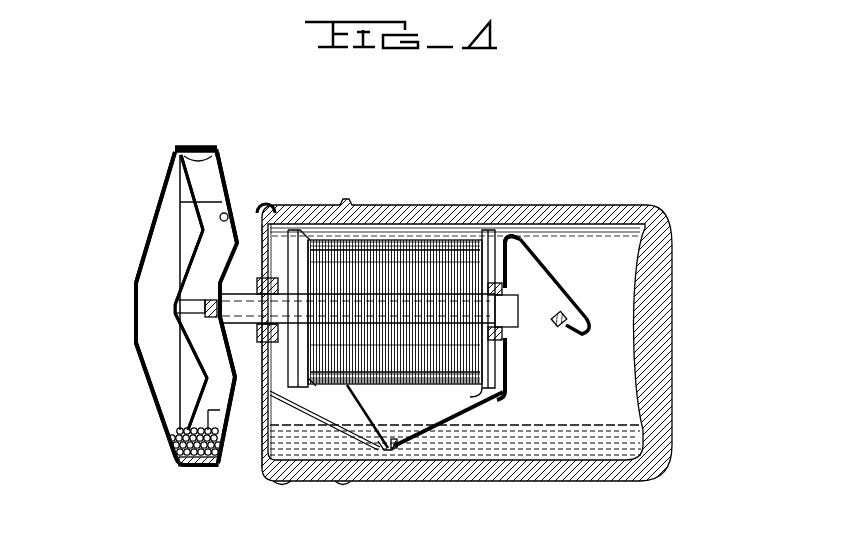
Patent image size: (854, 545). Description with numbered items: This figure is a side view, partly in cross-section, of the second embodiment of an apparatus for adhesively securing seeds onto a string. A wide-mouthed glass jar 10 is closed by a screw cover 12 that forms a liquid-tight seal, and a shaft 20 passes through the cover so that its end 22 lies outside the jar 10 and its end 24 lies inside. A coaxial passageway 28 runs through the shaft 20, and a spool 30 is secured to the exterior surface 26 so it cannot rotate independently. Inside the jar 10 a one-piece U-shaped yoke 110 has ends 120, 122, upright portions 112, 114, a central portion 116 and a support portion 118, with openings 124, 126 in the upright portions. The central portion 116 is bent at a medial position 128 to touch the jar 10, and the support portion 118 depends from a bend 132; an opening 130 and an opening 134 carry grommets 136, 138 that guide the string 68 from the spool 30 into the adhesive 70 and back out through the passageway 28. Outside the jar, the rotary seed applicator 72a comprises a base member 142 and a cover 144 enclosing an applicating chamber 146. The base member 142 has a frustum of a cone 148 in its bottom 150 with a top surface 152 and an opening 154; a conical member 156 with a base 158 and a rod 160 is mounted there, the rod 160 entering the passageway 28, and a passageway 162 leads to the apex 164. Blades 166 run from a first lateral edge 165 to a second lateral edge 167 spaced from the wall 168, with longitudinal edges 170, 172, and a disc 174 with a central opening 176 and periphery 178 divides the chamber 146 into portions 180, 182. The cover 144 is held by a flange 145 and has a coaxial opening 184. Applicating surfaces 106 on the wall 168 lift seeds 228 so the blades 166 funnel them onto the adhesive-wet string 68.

The glass jar 10 is at (428, 206).
The screw cover 12 is at (290, 484).
The shaft 20 is at (343, 265).
The shaft end 22 is at (202, 345).
The shaft end 24 is at (518, 305).
The exterior surface 26 is at (372, 272).
The passageway 28 is at (388, 262).
The spool 30 is at (428, 383).
The string 68 is at (372, 399).
The adhesive 70 is at (575, 426).
The rotary seed applicator 72a is at (213, 119).
The applicating surfaces 106 is at (205, 470).
The yoke 110 is at (498, 370).
The upright portion 112 is at (310, 402).
The upright portion 114 is at (506, 255).
The central portion 116 is at (448, 418).
The support portion 118 is at (545, 270).
The yoke end 120 is at (277, 284).
The yoke end 122 is at (581, 336).
The opening 124 is at (300, 382).
The opening 126 is at (518, 337).
The medial position 128 is at (383, 449).
The opening 130 is at (398, 446).
The bend 132 is at (508, 238).
The opening 134 is at (562, 318).
The grommet 136 is at (394, 451).
The grommet 138 is at (580, 324).
The base member 142 is at (220, 150).
The cover 144 is at (168, 200).
The flange 145 is at (190, 467).
The applicating chamber 146 is at (192, 402).
The frustum of a cone 148 is at (207, 283).
The bottom 150 is at (229, 425).
The top surface 152 is at (219, 275).
The opening 154 is at (265, 284).
The conical member 156 is at (138, 350).
The base 158 is at (262, 344).
The rod 160 is at (262, 328).
The passageway 162 is at (204, 302).
The apex 164 is at (182, 290).
The first lateral edge 165 is at (172, 300).
The blades 166 is at (208, 405).
The second lateral edge 167 is at (222, 455).
The wall 168 is at (185, 462).
The longitudinal edge 170 is at (174, 381).
The longitudinal edge 172 is at (236, 379).
The disc 174 is at (195, 220).
The central opening 176 is at (190, 308).
The periphery 178 is at (180, 172).
The chamber portion 180 is at (216, 202).
The chamber portion 182 is at (165, 208).
The coaxial opening 184 is at (138, 300).
The seeds 228 is at (190, 445).